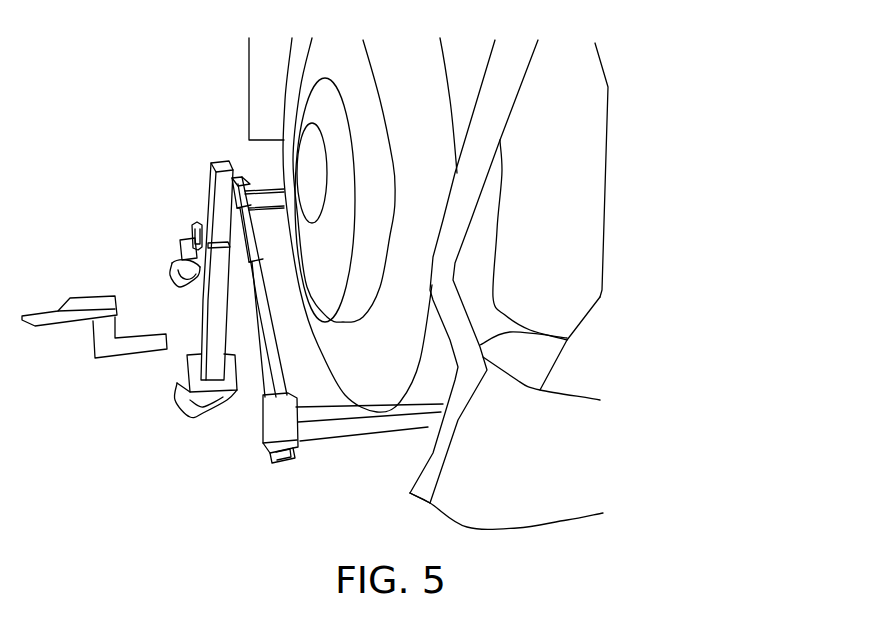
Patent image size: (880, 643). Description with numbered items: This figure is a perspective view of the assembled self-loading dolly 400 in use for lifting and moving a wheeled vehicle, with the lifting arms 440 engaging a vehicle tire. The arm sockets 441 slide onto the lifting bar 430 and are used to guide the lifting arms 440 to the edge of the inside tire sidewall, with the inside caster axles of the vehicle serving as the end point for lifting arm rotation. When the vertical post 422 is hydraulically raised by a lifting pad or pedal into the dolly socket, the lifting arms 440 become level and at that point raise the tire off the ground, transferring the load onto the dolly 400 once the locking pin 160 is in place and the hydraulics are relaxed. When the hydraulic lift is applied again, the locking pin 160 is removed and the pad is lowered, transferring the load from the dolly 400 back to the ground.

The dolly 400 is at (148, 247).
The vertical post 422 is at (212, 196).
The locking pin 160 is at (200, 223).
The lifting bar 430 is at (262, 388).
The arm sockets 441 is at (280, 435).
The lifting arms 440 is at (342, 423).